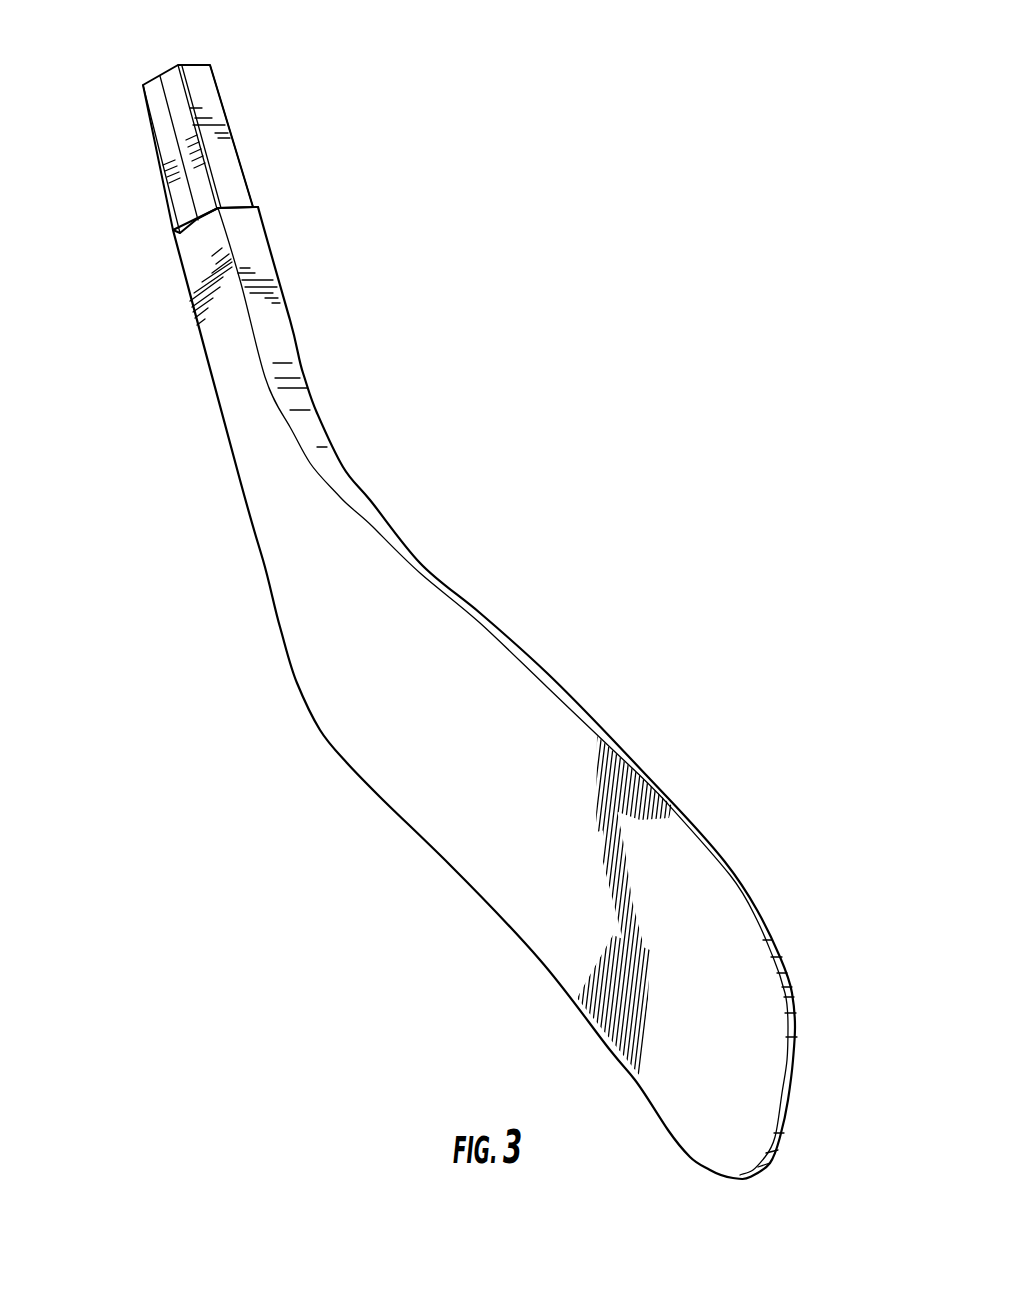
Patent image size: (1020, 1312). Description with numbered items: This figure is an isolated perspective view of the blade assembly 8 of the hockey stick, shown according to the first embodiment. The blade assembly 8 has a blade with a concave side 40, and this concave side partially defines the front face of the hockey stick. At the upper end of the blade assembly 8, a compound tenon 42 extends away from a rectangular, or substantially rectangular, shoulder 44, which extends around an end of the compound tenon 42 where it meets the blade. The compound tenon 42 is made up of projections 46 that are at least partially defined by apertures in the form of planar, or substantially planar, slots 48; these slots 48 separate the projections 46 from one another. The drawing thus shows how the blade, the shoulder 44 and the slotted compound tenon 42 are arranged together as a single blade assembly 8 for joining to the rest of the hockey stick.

The blade assembly 8 is at (442, 589).
The concave side 40 is at (485, 693).
The compound tenon 42 is at (201, 116).
The rectangular shoulder 44 is at (480, 662).
The projections 46 is at (170, 116).
The planar slots 48 is at (147, 121).